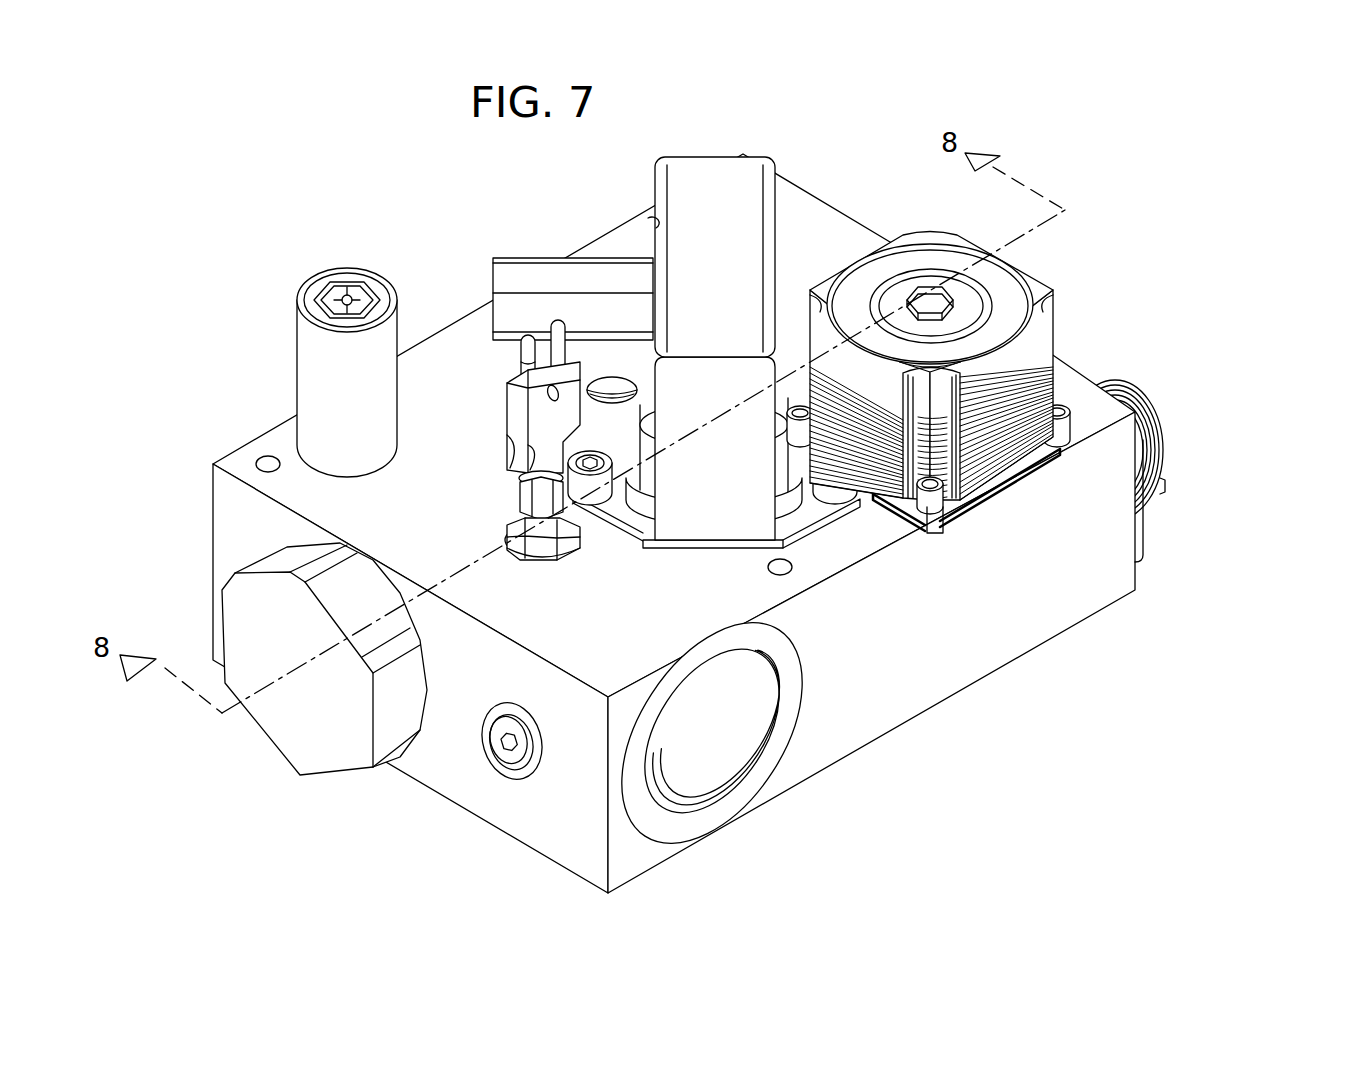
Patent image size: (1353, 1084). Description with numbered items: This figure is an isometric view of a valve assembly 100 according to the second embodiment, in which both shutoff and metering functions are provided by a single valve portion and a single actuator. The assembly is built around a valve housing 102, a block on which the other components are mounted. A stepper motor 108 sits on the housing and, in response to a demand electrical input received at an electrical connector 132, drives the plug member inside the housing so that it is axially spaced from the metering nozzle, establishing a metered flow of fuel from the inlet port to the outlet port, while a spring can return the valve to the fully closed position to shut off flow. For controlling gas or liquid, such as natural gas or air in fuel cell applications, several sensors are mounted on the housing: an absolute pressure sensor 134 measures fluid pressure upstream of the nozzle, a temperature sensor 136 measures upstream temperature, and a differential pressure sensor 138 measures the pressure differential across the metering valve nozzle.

The valve assembly 100 is at (862, 826).
The valve housing 102 is at (937, 653).
The stepper motor 108 is at (1040, 347).
The electrical connector 132 is at (1163, 442).
The absolute pressure sensor 134 is at (342, 367).
The temperature sensor 136 is at (505, 405).
The differential pressure sensor 138 is at (706, 168).